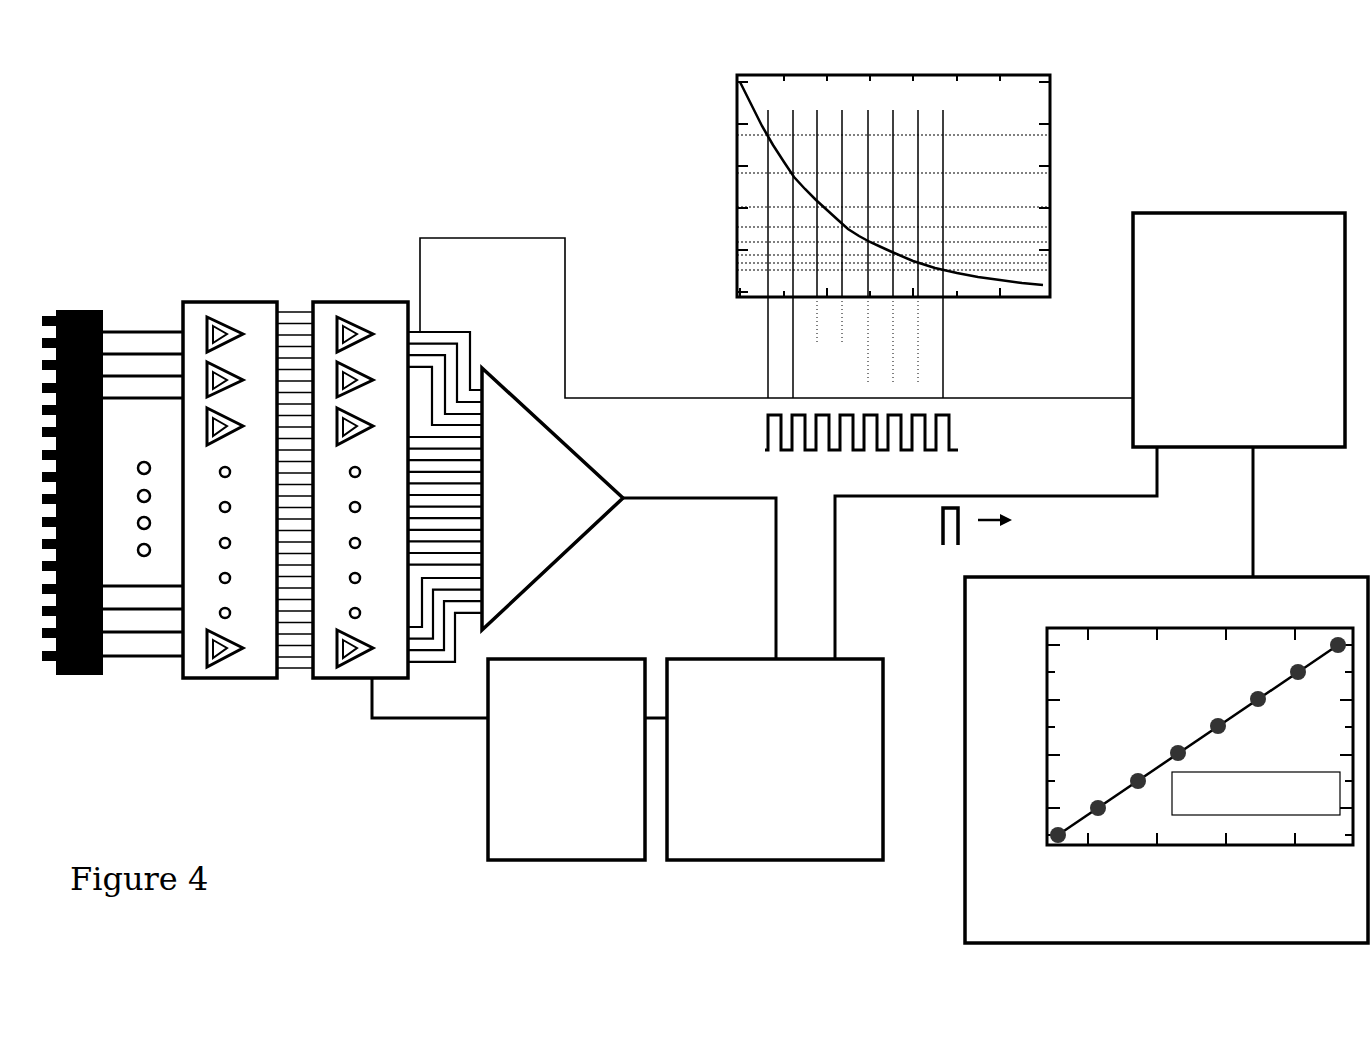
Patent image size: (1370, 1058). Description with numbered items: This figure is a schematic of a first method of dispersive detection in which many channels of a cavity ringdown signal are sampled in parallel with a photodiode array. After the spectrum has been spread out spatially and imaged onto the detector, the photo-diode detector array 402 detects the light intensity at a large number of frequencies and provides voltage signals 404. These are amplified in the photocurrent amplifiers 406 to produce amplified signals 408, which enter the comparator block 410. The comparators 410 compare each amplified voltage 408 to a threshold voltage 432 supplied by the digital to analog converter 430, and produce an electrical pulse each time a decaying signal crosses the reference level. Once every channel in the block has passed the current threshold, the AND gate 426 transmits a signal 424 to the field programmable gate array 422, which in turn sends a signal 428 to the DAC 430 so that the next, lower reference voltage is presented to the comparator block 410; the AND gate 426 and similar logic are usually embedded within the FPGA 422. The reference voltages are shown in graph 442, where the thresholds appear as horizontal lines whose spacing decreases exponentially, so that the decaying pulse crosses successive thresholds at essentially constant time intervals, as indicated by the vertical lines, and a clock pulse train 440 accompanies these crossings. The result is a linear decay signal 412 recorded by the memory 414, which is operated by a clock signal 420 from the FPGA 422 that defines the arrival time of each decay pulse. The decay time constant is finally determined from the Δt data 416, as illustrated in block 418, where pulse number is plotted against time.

The photo-diode detector array 402 is at (112, 735).
The voltage signals 404 is at (143, 473).
The photocurrent amplifiers 406 is at (197, 263).
The amplified signals 408 is at (293, 305).
The comparators 410 is at (322, 758).
The linear decay signal 412 is at (776, 300).
The memory 414 is at (1239, 330).
The Δt data 416 is at (1287, 512).
The decay time determination block 418 is at (1167, 760).
The clock signal 420 is at (996, 553).
The field programmable gate array 422 is at (775, 759).
The AND gate output signal 424 is at (699, 578).
The AND gate 426 is at (525, 565).
The FPGA output signal 428 is at (650, 708).
The digital to analog converter 430 is at (566, 759).
The threshold voltage 432 is at (430, 717).
The clock pulse train 440 is at (962, 428).
The reference voltage graph 442 is at (885, 234).